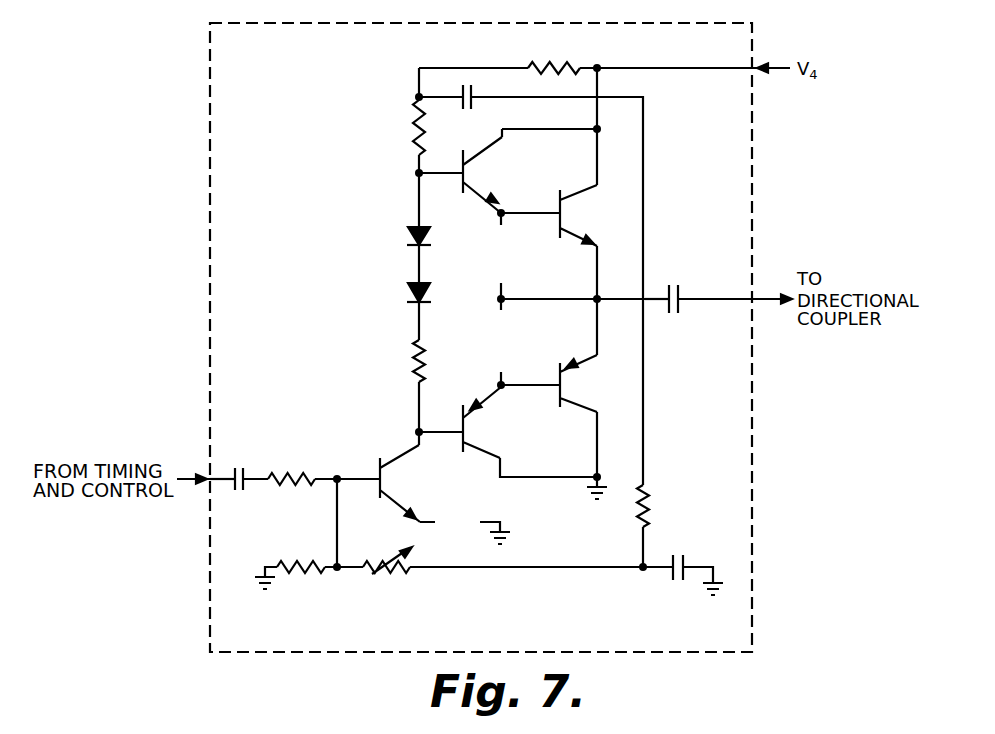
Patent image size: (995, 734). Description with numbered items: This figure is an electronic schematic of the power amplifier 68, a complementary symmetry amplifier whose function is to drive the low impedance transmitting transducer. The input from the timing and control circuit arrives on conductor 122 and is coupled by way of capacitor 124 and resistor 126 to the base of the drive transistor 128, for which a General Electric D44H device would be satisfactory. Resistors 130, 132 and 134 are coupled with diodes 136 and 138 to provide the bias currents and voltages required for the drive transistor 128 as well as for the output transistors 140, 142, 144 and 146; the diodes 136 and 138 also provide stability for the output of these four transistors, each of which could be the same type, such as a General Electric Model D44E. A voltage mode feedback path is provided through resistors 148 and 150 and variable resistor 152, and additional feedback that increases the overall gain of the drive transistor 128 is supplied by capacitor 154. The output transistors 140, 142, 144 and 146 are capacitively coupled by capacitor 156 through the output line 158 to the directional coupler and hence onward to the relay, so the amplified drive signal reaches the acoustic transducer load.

The power amplifier 68 is at (198, 154).
The conductor 122 is at (238, 468).
The capacitor 124 is at (233, 492).
The resistor 126 is at (306, 484).
The drive transistor 128 is at (392, 440).
The resistor 130 is at (411, 368).
The resistor 132 is at (412, 130).
The resistor 134 is at (568, 63).
The diode 136 is at (406, 238).
The diode 138 is at (406, 296).
The output transistor 140 is at (490, 434).
The output transistor 142 is at (495, 172).
The output transistor 144 is at (590, 213).
The output transistor 146 is at (592, 391).
The resistor 148 is at (315, 574).
The resistor 150 is at (652, 508).
The variable resistor 152 is at (389, 558).
The capacitor 154 is at (484, 105).
The capacitor 156 is at (668, 284).
The output line 158 is at (656, 303).